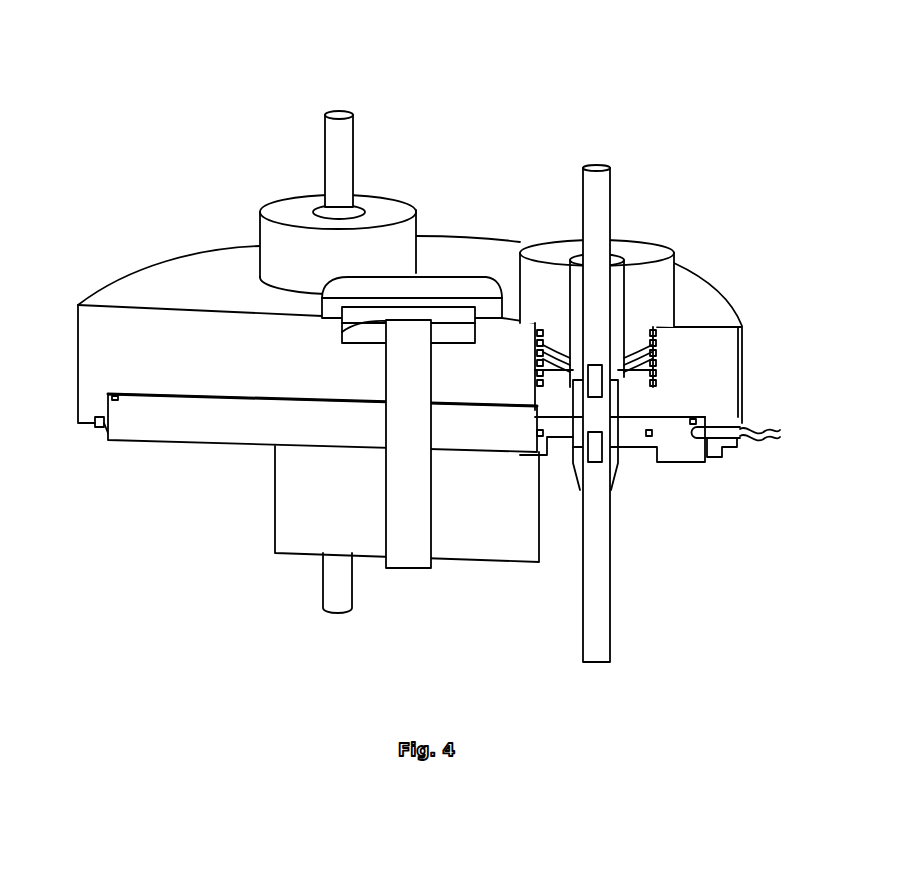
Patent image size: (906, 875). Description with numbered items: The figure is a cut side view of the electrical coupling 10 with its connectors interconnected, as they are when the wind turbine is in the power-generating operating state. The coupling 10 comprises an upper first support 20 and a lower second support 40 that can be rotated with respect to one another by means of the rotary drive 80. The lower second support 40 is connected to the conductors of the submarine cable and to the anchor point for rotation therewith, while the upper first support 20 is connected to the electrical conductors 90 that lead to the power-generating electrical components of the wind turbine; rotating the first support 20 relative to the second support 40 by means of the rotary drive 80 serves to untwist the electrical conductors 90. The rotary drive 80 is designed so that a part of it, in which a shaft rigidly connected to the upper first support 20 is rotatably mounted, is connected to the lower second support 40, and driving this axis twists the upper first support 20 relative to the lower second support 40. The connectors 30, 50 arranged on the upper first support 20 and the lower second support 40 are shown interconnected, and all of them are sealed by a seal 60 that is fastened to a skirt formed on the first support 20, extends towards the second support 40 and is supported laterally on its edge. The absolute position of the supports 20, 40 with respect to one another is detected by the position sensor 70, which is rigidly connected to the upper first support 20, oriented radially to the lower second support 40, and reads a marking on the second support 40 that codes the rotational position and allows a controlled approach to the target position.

The electrical coupling 10 is at (212, 86).
The upper first support 20 is at (192, 374).
The connector 30 is at (640, 406).
The lower second support 40 is at (202, 432).
The connector 50 is at (632, 452).
The seal 60 is at (105, 423).
The position sensor 70 is at (727, 435).
The rotary drive 80 is at (347, 512).
The electrical conductors 90 is at (597, 226).